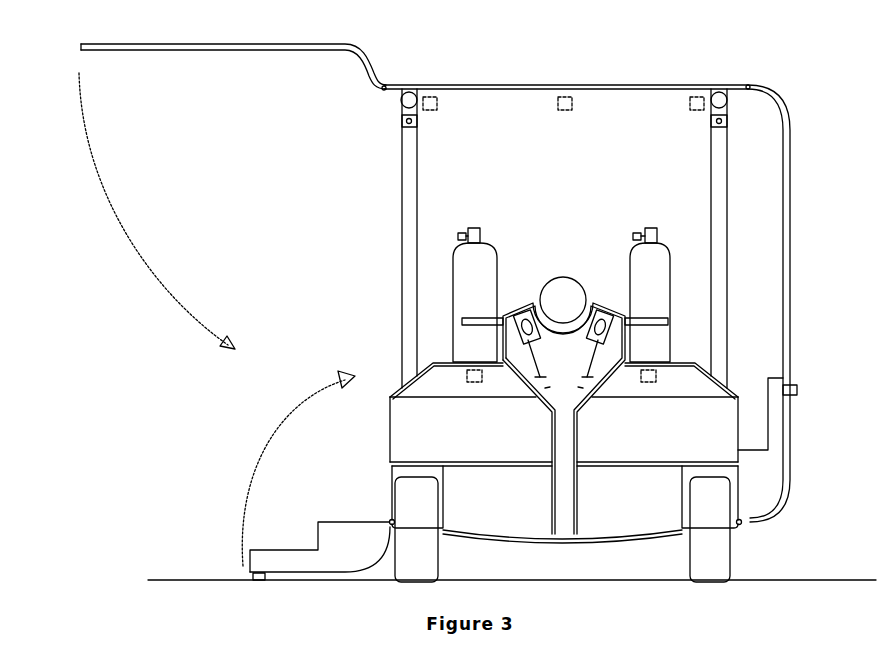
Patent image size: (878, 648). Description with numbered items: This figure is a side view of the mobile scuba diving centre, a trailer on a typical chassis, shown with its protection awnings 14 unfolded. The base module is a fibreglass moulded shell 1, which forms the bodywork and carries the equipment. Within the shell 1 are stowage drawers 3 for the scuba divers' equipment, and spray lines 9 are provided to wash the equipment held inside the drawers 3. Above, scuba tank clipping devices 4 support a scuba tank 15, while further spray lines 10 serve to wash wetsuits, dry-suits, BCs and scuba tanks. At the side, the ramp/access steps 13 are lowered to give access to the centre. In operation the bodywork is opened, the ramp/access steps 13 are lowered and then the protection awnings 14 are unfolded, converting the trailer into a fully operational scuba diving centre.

The shell 1 is at (703, 382).
The drawers 3 is at (703, 428).
The scuba tank clipping devices 4 is at (467, 320).
The spray lines to wash the drawers 9 is at (640, 380).
The spray lines to wash wetsuits, dry-suits, BCs and scuba tanks 10 is at (433, 110).
The ramp/access steps 13 is at (347, 543).
The protection awnings 14 is at (208, 50).
The scuba tank 15 is at (562, 292).